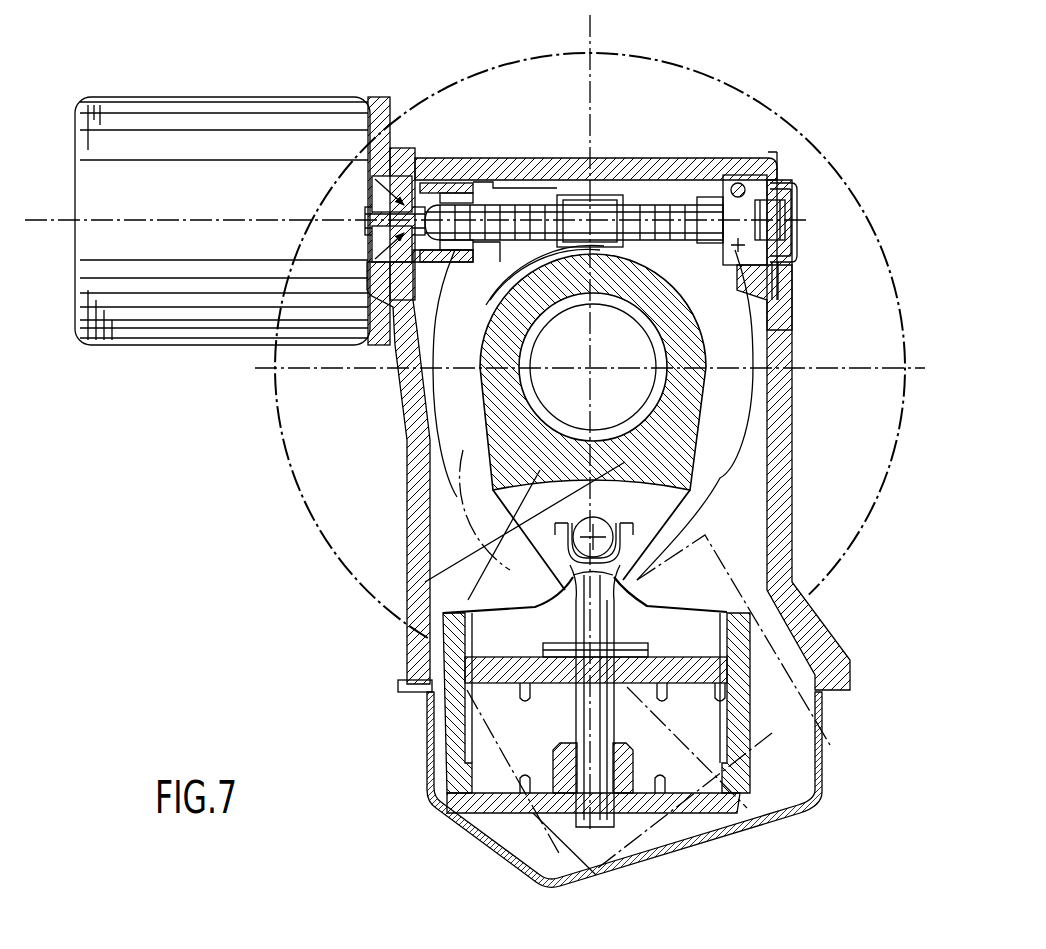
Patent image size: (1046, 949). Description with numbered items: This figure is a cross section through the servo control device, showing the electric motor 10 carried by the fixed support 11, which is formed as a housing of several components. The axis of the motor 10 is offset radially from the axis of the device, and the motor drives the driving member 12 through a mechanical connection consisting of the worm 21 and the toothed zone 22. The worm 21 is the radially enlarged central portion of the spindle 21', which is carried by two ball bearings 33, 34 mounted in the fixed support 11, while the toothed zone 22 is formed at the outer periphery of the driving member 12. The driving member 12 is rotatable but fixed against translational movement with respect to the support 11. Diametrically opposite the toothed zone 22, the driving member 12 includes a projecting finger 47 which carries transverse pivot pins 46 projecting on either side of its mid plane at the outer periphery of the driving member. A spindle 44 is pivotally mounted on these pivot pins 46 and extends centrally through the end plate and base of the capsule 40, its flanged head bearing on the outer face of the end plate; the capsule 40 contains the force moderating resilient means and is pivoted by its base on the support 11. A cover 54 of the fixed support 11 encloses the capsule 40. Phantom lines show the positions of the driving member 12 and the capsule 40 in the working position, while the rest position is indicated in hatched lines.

The electric motor 10 is at (212, 345).
The fixed support 11 is at (400, 516).
The driving member 12 is at (716, 348).
The worm 21 is at (598, 169).
The spindle 21' is at (574, 166).
The toothed zone 22 is at (497, 268).
The ball bearing 33 is at (750, 170).
The ball bearing 34 is at (448, 182).
The capsule 40 is at (440, 797).
The spindle 44 is at (593, 815).
The transverse pivot pins 46 is at (605, 532).
The projecting finger 47 is at (480, 563).
The cover 54 is at (730, 835).